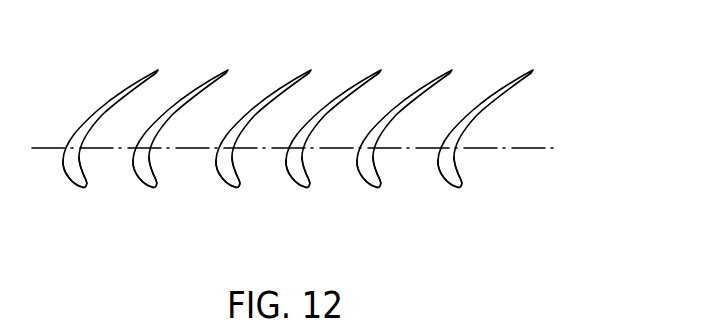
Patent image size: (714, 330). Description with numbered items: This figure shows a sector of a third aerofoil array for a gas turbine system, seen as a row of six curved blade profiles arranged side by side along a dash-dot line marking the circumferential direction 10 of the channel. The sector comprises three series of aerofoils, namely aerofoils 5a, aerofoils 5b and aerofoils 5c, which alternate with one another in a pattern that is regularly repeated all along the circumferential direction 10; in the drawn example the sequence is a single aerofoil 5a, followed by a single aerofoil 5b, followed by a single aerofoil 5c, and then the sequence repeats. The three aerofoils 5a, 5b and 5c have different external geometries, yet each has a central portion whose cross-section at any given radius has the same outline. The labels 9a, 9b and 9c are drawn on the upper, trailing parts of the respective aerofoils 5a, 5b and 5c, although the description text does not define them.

The circumferential direction 10 is at (538, 147).
The first blade airfoil 9a is at (102, 105).
The second blade airfoil 9b is at (192, 97).
The third blade airfoil 9c is at (258, 106).
The aerofoil 5a is at (76, 186).
The aerofoil 5b is at (146, 188).
The aerofoil 5c is at (233, 192).